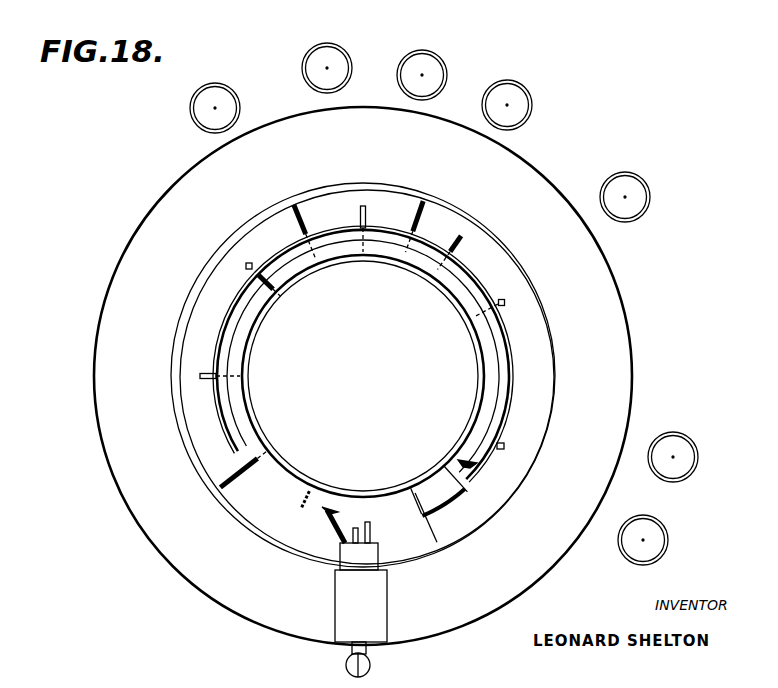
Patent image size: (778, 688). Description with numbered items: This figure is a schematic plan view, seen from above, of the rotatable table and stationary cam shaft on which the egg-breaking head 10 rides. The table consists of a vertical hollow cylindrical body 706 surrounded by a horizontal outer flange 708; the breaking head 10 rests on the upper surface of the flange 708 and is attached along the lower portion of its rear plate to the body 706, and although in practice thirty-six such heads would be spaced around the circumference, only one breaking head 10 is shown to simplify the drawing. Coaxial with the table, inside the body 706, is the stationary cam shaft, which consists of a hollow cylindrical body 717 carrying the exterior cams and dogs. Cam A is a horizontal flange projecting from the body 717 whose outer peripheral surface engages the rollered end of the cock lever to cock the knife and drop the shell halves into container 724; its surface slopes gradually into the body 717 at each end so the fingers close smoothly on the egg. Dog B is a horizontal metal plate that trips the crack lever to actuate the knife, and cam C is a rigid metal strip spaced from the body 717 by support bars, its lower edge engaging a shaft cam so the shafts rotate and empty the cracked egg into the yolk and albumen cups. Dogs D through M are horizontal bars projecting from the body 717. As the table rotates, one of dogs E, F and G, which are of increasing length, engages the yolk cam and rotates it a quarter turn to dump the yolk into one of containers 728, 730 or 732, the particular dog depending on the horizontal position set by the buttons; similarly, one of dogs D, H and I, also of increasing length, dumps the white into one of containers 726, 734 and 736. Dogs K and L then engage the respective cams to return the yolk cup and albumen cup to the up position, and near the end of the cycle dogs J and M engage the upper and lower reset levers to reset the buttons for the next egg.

The breaking head 10 is at (361, 599).
The vertical hollow cylindrical body 706 is at (557, 345).
The horizontal outer flange 708 is at (632, 358).
The hollow cylindrical body 717 is at (237, 340).
The container 724 is at (668, 549).
The container 726 is at (698, 463).
The container 728 is at (650, 203).
The container 730 is at (532, 93).
The container 732 is at (432, 50).
The container 734 is at (328, 43).
The container 736 is at (217, 84).
The cam A is at (477, 464).
The dog B is at (463, 507).
The cam C is at (437, 542).
The dog D is at (504, 447).
The dog E is at (505, 302).
The dog F is at (462, 236).
The dog G is at (424, 201).
The dog H is at (366, 206).
The dog I is at (293, 204).
The dog J is at (247, 264).
The dog K is at (200, 376).
The dog L is at (221, 485).
The dog M is at (302, 508).